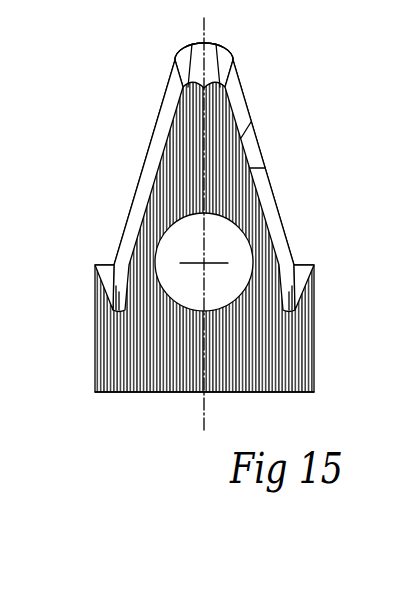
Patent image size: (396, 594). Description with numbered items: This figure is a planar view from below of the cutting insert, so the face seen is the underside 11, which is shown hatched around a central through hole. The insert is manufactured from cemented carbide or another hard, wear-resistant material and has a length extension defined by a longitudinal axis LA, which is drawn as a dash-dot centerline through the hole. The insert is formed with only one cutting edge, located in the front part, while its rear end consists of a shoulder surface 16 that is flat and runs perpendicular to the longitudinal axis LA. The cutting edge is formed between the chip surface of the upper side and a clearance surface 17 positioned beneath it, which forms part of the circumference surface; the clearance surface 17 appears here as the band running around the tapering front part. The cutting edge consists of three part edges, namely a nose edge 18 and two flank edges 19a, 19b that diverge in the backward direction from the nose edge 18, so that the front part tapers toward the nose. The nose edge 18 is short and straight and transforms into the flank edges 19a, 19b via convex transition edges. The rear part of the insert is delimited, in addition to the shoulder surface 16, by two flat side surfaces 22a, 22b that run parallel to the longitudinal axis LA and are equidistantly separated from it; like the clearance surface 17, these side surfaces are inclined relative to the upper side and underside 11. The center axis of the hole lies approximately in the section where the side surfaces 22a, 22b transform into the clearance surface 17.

The underside 11 is at (275, 348).
The shoulder surface 16 is at (188, 392).
The clearance surface 17 is at (157, 148).
The nose edge 18 is at (209, 44).
The flank edge 19a is at (262, 181).
The flank edge 19b is at (139, 179).
The side surface 22a is at (307, 322).
The side surface 22b is at (102, 325).
The longitudinal axis LA is at (205, 402).